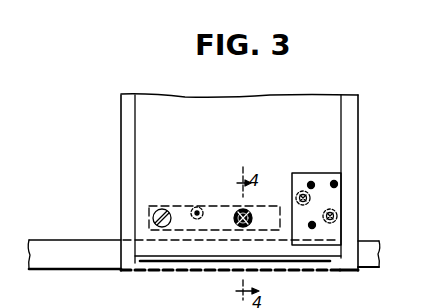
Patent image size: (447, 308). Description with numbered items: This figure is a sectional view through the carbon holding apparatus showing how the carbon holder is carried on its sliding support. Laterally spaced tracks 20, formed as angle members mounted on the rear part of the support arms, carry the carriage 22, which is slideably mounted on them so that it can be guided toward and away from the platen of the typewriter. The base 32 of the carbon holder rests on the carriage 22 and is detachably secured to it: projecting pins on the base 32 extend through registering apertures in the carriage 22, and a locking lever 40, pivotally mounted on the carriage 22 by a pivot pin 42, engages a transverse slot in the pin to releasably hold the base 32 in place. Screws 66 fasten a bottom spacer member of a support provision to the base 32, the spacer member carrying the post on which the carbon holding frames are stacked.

The track 20 is at (68, 262).
The carriage 22 is at (128, 183).
The base 32 is at (305, 108).
The locking lever 40 is at (222, 206).
The pivot pin 42 is at (191, 208).
The screw 66 is at (309, 198).